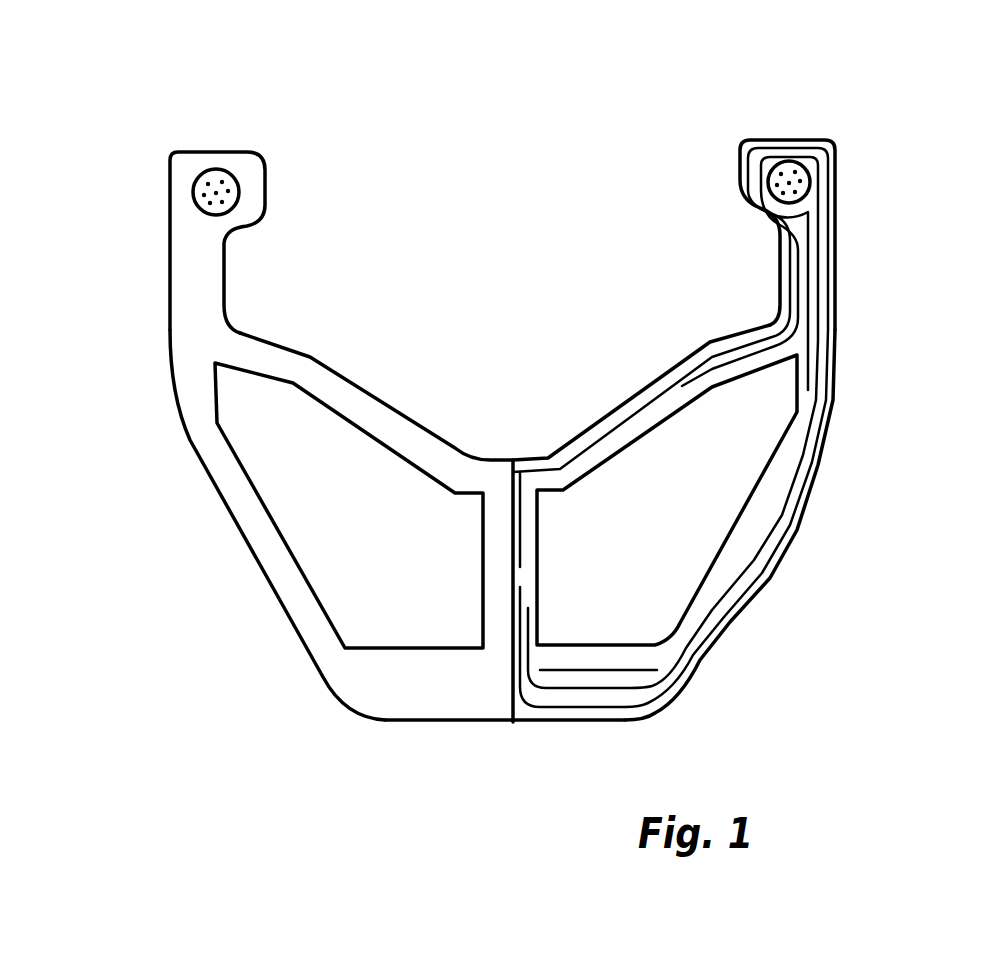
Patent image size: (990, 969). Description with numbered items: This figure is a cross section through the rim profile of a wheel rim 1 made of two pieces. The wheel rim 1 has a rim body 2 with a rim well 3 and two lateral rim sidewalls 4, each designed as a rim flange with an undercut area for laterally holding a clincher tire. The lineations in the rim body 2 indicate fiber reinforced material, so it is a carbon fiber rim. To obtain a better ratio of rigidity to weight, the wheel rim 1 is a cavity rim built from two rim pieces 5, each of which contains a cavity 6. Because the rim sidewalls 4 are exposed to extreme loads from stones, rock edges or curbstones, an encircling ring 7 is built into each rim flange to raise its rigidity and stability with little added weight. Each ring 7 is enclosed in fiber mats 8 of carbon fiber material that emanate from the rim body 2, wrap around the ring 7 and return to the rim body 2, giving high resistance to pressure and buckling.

The wheel rim 1 is at (500, 435).
The rim body 2 is at (489, 525).
The rim well 3 is at (452, 436).
The rim sidewall 4 is at (187, 273).
The rim piece 5 is at (556, 732).
The cavity 6 is at (385, 547).
The encircling ring 7 is at (220, 178).
The fiber mat 8 is at (835, 222).